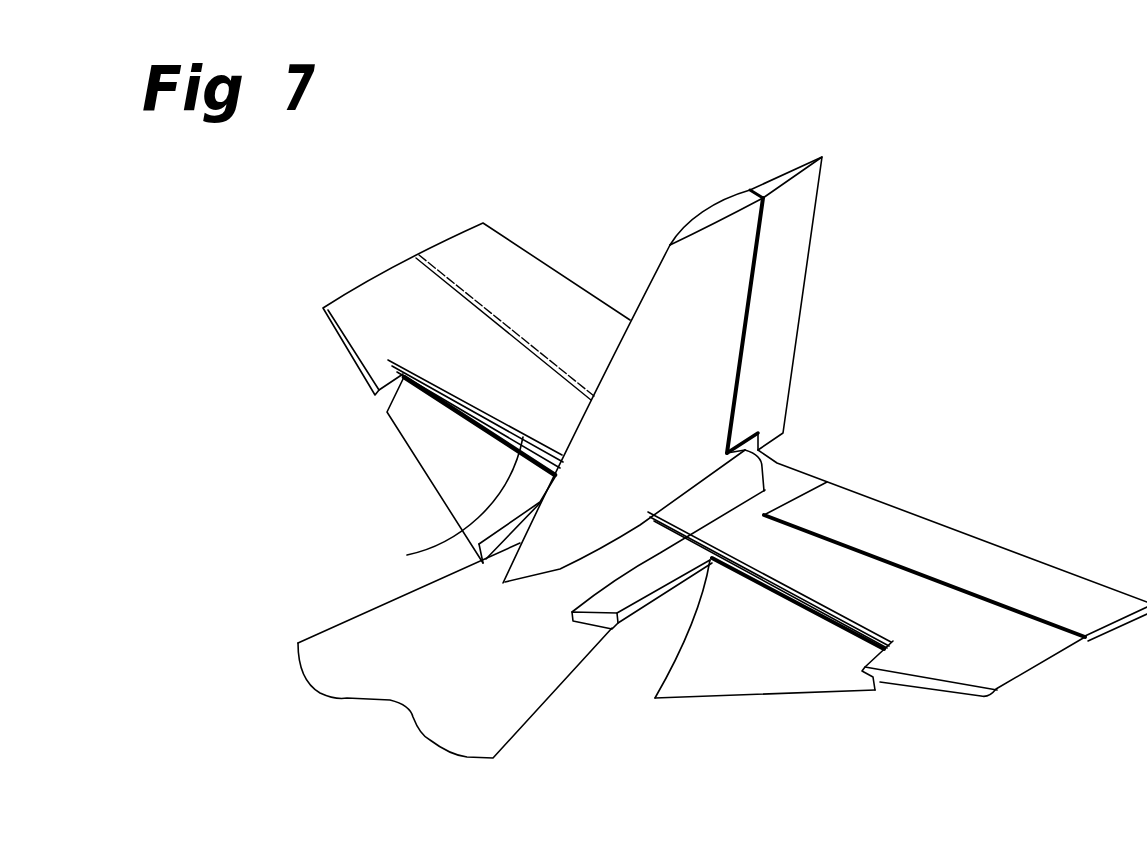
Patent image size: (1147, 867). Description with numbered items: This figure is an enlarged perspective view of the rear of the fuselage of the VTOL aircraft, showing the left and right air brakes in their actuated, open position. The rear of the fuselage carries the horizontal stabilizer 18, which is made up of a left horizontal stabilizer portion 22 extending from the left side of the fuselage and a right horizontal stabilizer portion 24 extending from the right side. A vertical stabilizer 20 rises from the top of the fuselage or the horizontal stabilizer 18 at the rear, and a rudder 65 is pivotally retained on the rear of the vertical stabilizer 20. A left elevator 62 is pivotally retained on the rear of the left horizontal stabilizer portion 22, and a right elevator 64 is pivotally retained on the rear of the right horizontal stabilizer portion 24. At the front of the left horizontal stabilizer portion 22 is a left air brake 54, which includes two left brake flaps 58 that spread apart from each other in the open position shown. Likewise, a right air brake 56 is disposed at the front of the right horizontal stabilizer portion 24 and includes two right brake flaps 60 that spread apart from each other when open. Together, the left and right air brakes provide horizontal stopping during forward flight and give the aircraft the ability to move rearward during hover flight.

The horizontal stabilizer 18 is at (928, 355).
The vertical stabilizer 20 is at (663, 273).
The rudder 65 is at (788, 257).
The right horizontal stabilizer portion 24 is at (352, 300).
The right elevator 64 is at (517, 287).
The left horizontal stabilizer portion 22 is at (1008, 652).
The left elevator 62 is at (930, 540).
The right air brake 56 is at (362, 498).
The right brake flaps 60 is at (413, 430).
The left air brake 54 is at (694, 768).
The left brake flaps 58 is at (707, 562).